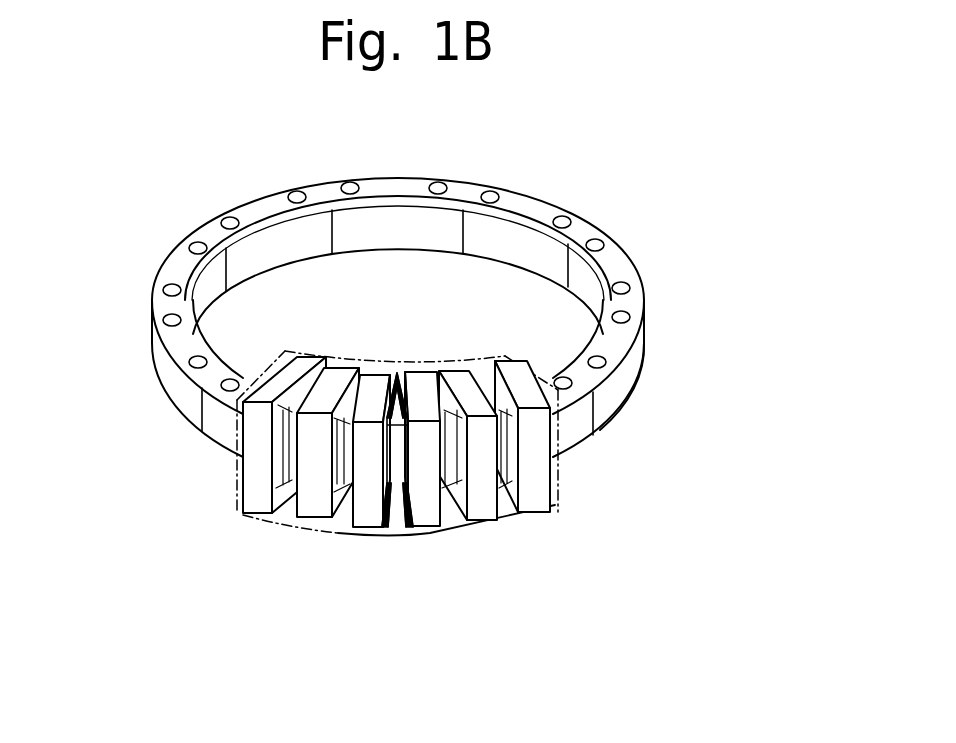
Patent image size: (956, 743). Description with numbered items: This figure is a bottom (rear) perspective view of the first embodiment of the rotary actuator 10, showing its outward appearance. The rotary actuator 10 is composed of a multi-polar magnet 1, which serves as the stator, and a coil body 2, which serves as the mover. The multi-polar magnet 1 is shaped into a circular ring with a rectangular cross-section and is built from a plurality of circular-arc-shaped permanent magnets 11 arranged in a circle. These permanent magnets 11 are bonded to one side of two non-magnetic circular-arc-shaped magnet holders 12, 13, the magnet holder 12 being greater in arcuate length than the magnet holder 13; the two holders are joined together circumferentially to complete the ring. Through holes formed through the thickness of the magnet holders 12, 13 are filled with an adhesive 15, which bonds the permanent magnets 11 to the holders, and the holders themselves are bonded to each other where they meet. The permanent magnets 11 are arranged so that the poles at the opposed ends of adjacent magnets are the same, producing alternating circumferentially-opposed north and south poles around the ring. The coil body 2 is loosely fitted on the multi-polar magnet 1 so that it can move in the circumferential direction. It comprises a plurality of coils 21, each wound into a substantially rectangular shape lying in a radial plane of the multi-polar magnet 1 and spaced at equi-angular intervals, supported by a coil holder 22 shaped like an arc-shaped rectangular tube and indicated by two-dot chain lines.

The rotary actuator 10 is at (601, 139).
The multi-polar magnet 1 is at (616, 222).
The permanent magnet 11 is at (361, 238).
The circular-arc-shaped magnet holder 12 is at (630, 333).
The circular-arc-shaped magnet holder 13 is at (397, 176).
The adhesive 15 is at (562, 217).
The coil body 2 is at (418, 486).
The coil 21 is at (303, 506).
The coil holder 22 is at (393, 538).